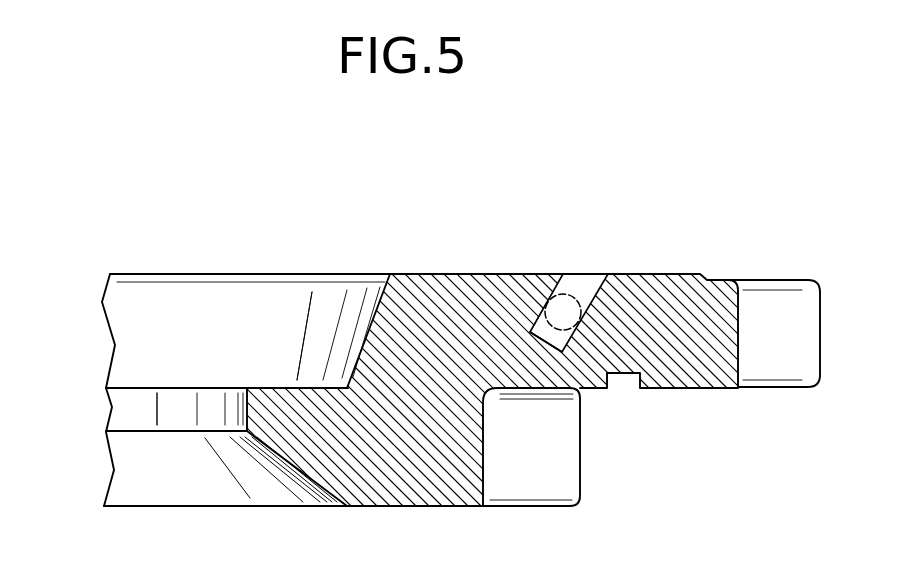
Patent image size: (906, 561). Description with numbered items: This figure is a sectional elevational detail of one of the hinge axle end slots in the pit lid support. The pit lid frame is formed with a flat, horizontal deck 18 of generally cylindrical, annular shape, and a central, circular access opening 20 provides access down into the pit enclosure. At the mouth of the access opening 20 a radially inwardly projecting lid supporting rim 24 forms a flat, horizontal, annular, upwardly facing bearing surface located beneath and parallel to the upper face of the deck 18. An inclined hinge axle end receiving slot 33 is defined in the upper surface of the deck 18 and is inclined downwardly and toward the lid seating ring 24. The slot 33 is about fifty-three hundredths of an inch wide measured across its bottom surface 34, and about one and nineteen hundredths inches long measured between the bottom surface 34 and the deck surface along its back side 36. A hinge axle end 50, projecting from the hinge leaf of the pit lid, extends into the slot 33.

The deck 18 is at (660, 273).
The access opening 20 is at (143, 407).
The lid supporting rim 24 is at (270, 388).
The hinge axle end receiving slot 33 is at (575, 284).
The bottom surface 34 is at (543, 337).
The back side 36 is at (592, 280).
The hinge axle end 50 is at (568, 312).